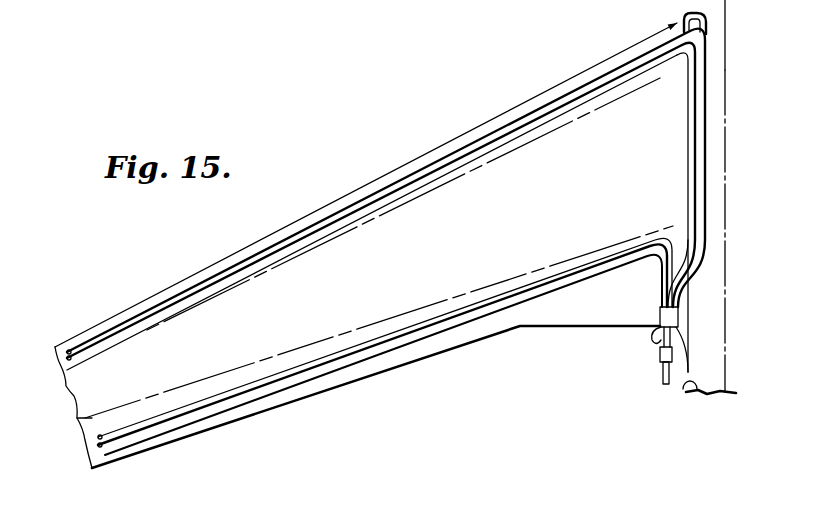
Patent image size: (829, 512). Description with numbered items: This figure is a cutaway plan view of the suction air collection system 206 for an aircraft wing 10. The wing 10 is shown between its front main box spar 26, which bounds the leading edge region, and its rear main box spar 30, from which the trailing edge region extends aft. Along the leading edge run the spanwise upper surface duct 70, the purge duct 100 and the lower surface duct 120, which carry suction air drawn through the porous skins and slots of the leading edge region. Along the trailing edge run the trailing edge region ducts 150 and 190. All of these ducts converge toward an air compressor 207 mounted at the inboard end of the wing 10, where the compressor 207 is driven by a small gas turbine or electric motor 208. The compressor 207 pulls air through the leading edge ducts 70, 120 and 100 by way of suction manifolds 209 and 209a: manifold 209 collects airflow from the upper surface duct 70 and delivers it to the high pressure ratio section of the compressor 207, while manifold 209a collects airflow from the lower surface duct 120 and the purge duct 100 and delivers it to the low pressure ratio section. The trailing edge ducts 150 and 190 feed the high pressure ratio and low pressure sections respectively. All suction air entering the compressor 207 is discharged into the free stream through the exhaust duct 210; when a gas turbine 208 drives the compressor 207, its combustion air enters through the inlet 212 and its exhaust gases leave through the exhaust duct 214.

The wing 10 is at (74, 396).
The rear main box spar 30 is at (80, 422).
The front main box spar 26 is at (136, 340).
The upper surface duct 70 is at (507, 126).
The purge duct 100 is at (453, 139).
The lower surface duct 120 is at (395, 180).
The trailing edge region duct 150 is at (203, 405).
The trailing edge region duct 190 is at (552, 299).
The suction air collection system 206 is at (411, 369).
The air compressor 207 is at (680, 318).
The gas turbine or electric motor 208 is at (657, 354).
The suction manifold 209 is at (696, 123).
The suction manifold 209a is at (704, 66).
The exhaust duct 210 is at (690, 397).
The inlet 212 is at (656, 332).
The exhaust duct 214 is at (659, 374).